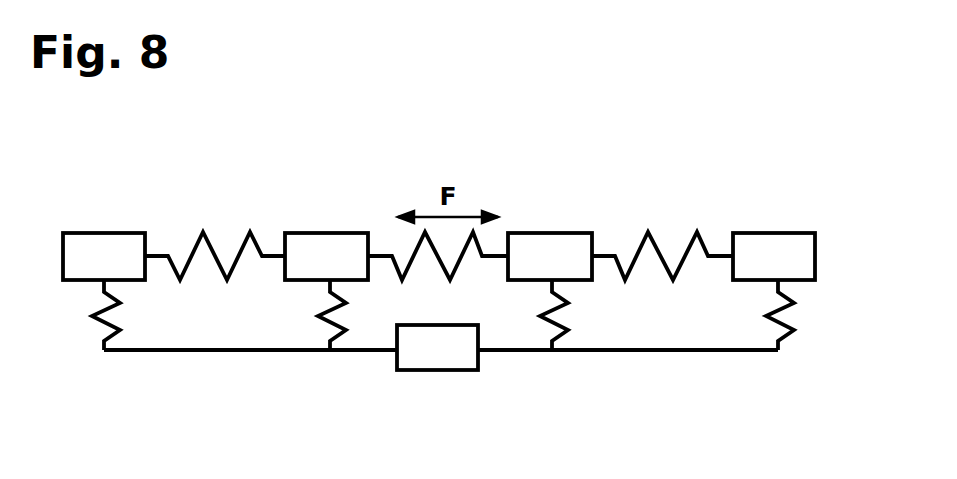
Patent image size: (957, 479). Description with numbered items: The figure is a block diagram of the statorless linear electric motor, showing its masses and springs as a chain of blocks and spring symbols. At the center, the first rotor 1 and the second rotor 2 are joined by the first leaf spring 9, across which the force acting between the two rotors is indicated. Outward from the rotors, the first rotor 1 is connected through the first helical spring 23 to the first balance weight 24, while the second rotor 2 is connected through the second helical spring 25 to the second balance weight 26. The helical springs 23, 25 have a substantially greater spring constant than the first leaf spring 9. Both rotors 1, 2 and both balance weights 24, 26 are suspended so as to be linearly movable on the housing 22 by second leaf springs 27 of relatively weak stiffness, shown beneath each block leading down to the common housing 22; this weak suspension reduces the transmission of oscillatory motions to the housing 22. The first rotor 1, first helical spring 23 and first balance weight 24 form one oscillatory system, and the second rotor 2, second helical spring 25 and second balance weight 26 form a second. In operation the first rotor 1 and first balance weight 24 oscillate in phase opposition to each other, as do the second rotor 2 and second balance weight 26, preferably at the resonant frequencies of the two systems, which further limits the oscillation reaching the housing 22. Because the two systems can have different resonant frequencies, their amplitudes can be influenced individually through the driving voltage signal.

The first rotor 1 is at (549, 238).
The second rotor 2 is at (327, 240).
The first leaf spring 9 is at (397, 258).
The housing 22 is at (450, 348).
The first helical spring 23 is at (660, 238).
The first balance weight 24 is at (783, 238).
The second helical spring 25 is at (210, 238).
The second balance weight 26 is at (88, 240).
The second leaf springs 27 is at (790, 307).